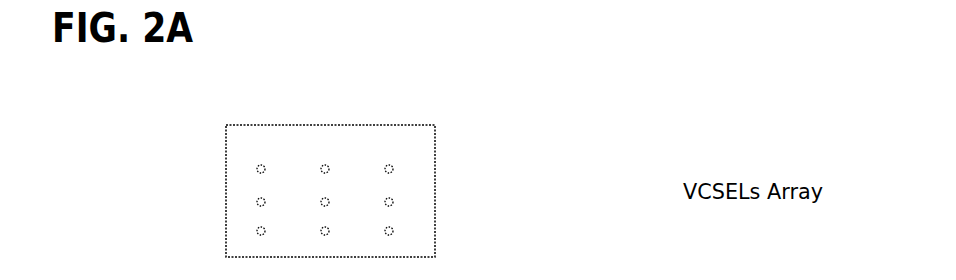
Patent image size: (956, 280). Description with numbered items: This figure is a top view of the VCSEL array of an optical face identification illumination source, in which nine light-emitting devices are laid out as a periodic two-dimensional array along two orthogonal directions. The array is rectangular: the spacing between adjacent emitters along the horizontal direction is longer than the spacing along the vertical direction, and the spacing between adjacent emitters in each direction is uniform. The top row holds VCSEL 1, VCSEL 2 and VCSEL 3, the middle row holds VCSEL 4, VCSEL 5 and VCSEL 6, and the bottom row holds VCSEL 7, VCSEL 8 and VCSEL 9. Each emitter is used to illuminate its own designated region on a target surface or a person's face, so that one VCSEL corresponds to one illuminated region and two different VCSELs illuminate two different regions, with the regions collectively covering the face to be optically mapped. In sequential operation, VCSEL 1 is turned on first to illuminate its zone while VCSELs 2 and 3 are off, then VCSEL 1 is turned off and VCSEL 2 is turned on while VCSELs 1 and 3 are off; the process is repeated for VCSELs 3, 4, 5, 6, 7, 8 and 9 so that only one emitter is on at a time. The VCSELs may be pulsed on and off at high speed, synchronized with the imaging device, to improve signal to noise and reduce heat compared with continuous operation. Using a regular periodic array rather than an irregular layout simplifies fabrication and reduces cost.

The VCSEL 1 is at (269, 176).
The VCSEL 2 is at (335, 176).
The VCSEL 3 is at (400, 176).
The VCSEL 4 is at (269, 204).
The VCSEL 5 is at (335, 204).
The VCSEL 6 is at (400, 204).
The VCSEL 7 is at (269, 233).
The VCSEL 8 is at (335, 233).
The VCSEL 9 is at (400, 233).